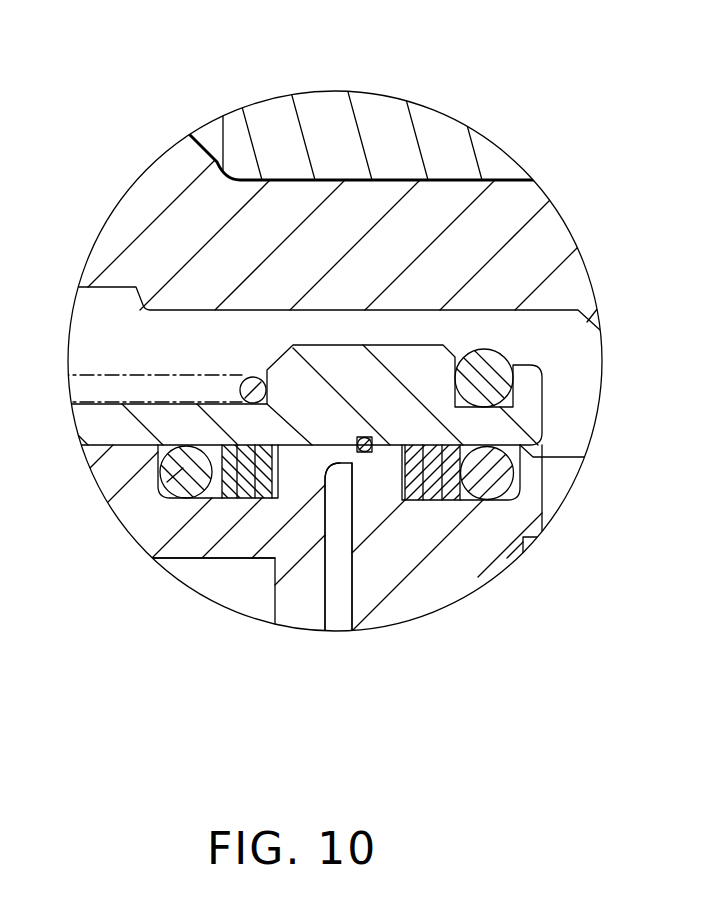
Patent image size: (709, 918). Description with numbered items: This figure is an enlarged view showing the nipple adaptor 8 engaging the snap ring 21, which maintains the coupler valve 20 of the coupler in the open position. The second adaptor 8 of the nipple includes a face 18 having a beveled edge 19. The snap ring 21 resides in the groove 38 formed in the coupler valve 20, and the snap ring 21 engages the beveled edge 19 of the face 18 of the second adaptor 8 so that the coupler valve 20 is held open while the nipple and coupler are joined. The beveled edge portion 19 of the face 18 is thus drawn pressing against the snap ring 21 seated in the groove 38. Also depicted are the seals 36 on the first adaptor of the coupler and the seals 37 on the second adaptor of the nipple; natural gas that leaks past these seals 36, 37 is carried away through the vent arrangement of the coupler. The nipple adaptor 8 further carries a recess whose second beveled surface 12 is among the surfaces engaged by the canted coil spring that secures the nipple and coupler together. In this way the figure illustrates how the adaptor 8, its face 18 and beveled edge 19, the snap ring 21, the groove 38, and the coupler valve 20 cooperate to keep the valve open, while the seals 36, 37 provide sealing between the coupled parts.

The nipple adaptor 8 is at (448, 565).
The second beveled surface 12 is at (162, 385).
The face 18 is at (350, 588).
The beveled edge 19 is at (325, 461).
The coupler valve 20 is at (310, 402).
The snap ring 21 is at (327, 462).
The seals 36 is at (160, 500).
The seals 37 is at (490, 472).
The groove 38 is at (370, 437).